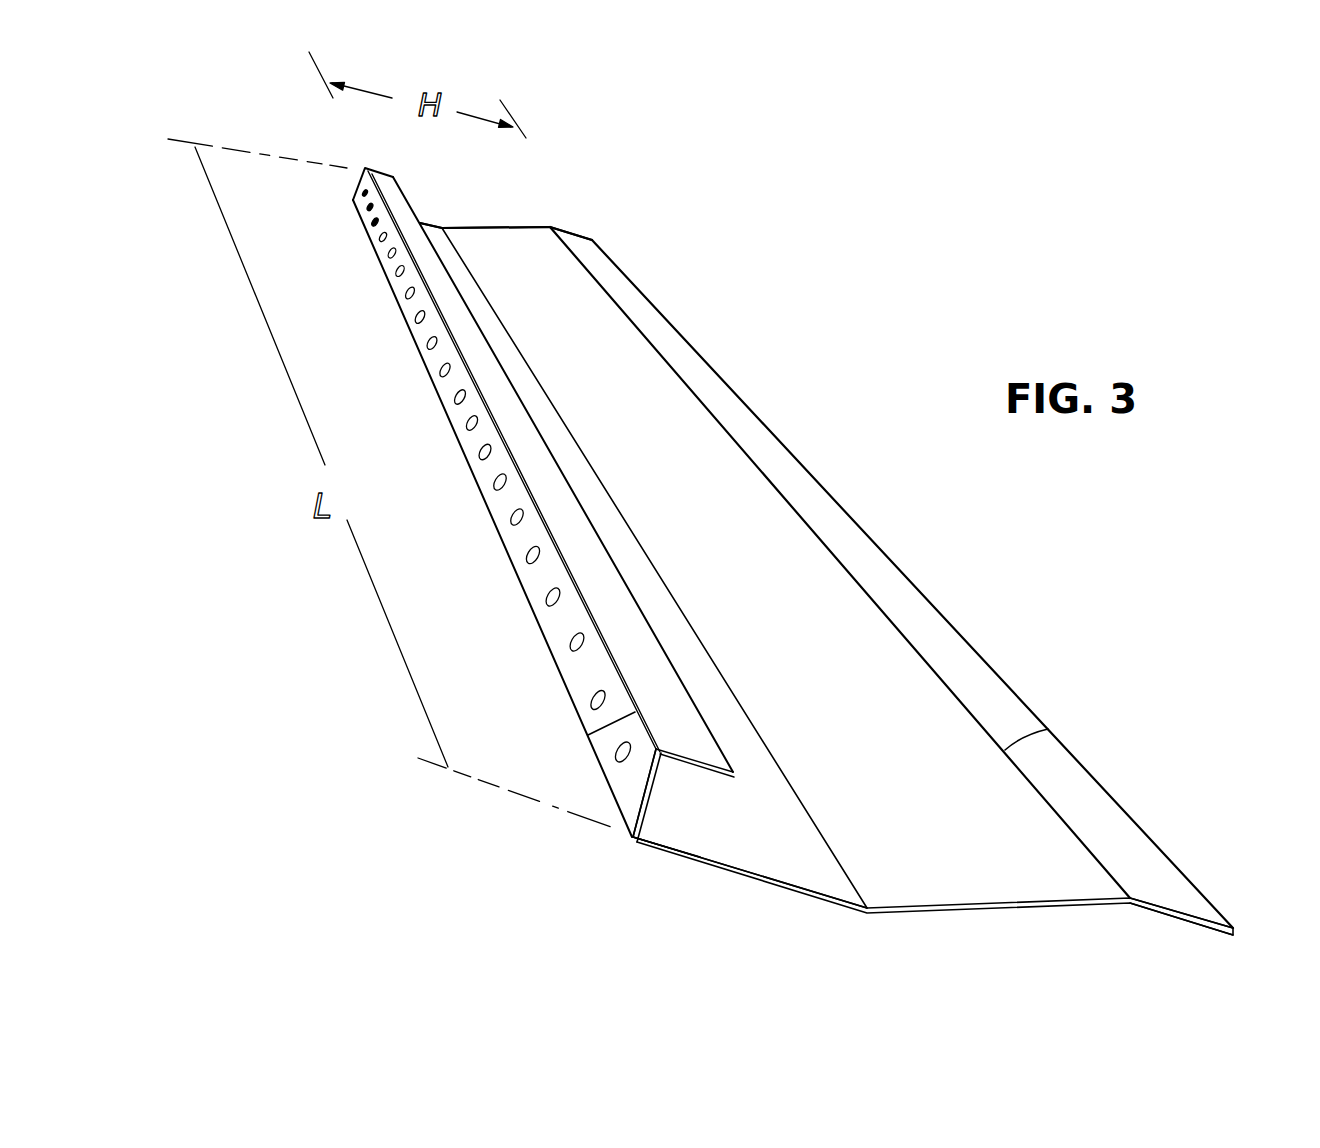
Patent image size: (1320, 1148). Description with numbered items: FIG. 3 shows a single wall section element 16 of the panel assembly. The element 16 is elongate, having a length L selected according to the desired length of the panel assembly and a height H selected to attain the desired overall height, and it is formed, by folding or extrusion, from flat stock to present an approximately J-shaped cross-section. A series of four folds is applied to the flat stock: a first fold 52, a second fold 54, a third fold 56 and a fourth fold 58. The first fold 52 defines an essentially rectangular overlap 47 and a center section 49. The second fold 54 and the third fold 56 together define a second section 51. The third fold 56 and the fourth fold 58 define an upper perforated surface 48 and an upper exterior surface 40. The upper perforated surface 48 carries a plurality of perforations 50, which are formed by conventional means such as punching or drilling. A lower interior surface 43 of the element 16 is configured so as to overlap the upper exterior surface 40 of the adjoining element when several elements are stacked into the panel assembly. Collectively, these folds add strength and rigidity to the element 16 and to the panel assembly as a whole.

The element 16 is at (826, 594).
The upper exterior surface 40 is at (543, 492).
The lower interior surface 43 is at (1167, 913).
The overlap 47 is at (700, 376).
The upper perforated surface 48 is at (494, 513).
The center section 49 is at (730, 527).
The perforations 50 is at (478, 452).
The second section 51 is at (752, 835).
The first fold 52 is at (1048, 729).
The second fold 54 is at (800, 888).
The third fold 56 is at (630, 847).
The fourth fold 58 is at (588, 735).